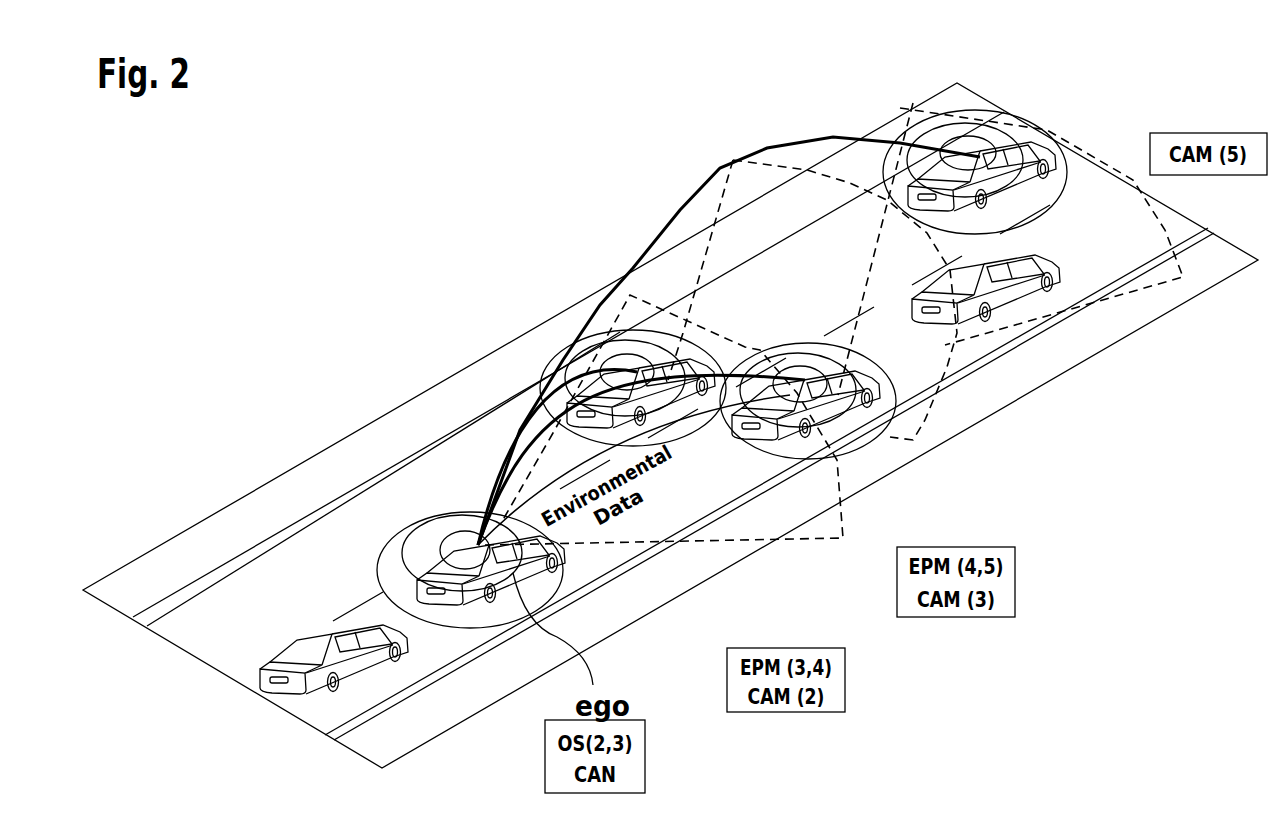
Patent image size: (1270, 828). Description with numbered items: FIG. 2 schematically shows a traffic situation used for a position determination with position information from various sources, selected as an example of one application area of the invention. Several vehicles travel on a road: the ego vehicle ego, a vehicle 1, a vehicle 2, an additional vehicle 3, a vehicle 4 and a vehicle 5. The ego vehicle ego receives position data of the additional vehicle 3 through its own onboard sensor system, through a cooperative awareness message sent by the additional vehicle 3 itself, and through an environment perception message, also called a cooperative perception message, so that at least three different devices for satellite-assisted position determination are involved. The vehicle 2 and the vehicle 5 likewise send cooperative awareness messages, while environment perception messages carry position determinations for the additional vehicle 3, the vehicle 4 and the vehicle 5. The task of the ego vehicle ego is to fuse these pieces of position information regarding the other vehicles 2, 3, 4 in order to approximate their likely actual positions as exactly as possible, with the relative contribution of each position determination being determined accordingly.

The first vehicle 1 is at (302, 645).
The vehicle 2 is at (667, 413).
The additional vehicle 3 is at (795, 380).
The vehicle 4 is at (1015, 287).
The vehicle 5 is at (1013, 157).
The ego vehicle ego is at (471, 570).